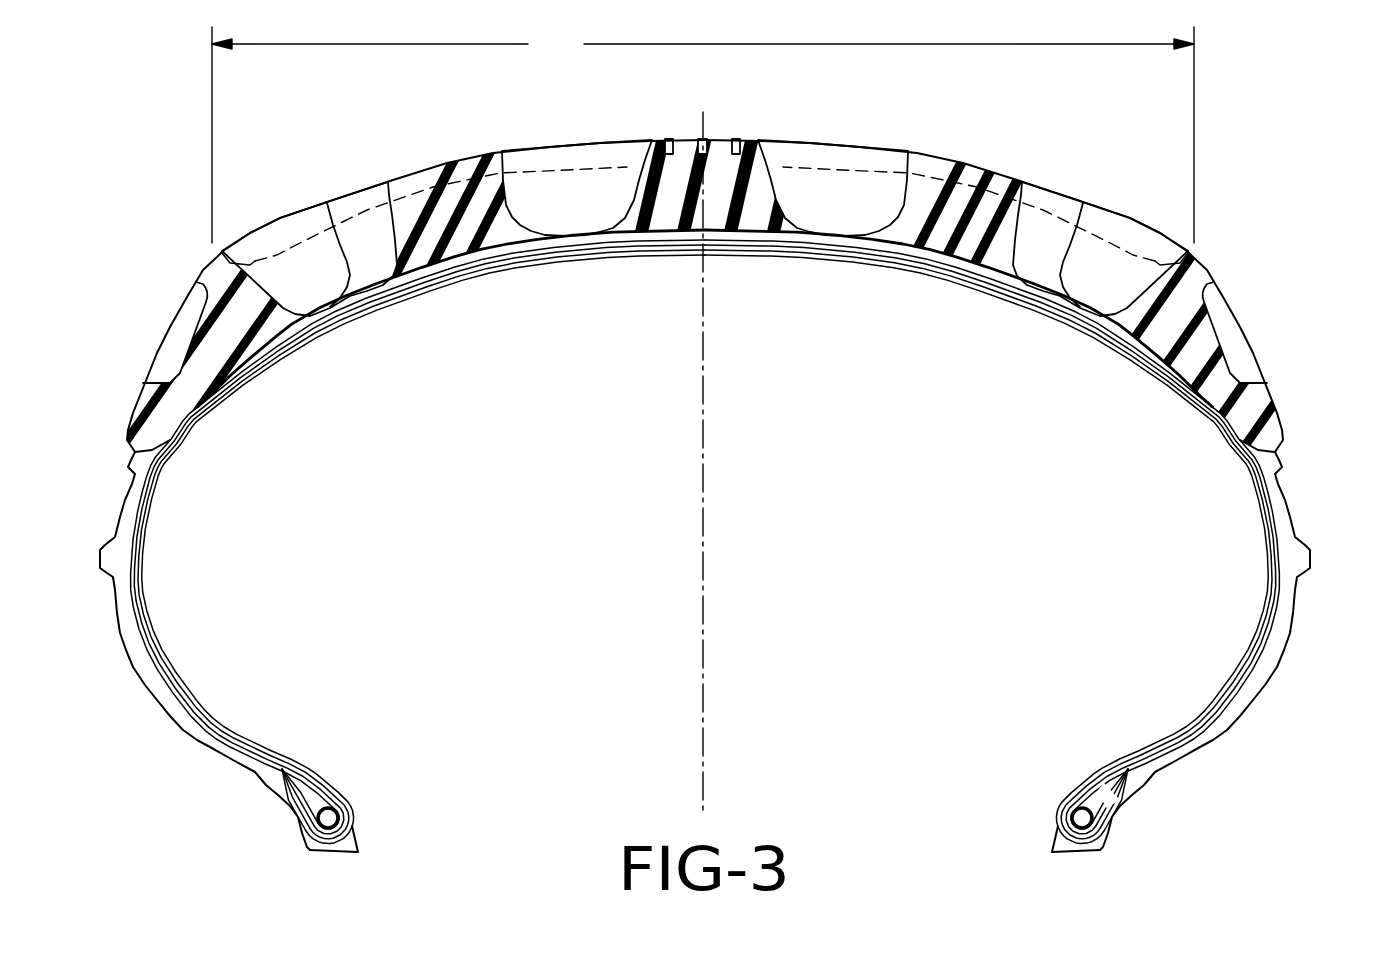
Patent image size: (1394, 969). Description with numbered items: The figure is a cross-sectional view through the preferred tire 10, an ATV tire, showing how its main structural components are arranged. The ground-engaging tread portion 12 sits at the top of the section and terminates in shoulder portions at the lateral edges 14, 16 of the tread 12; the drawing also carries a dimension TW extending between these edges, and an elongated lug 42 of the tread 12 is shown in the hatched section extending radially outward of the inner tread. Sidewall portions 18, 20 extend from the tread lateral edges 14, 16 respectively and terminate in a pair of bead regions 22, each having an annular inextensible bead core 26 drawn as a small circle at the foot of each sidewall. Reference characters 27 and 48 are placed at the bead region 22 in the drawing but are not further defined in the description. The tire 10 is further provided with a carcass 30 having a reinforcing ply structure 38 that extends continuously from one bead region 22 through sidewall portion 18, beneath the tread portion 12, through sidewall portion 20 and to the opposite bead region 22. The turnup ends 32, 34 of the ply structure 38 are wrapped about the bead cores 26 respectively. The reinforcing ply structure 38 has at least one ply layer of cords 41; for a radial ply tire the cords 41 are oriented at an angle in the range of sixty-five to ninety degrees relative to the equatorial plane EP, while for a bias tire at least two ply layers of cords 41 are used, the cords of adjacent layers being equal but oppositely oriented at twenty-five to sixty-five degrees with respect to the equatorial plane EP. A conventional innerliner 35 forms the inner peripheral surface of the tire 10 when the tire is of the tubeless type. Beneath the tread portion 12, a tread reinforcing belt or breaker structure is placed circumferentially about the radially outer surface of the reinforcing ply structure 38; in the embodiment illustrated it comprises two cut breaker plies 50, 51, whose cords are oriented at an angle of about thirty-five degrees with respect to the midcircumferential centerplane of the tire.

The tire 10 is at (697, 452).
The tread portion 12 is at (697, 300).
The lateral edge of the tread 14 is at (212, 137).
The lateral edge of the tread 16 is at (1194, 137).
The sidewall portion 18 is at (1252, 700).
The sidewall portion 20 is at (159, 704).
The bead region 22 is at (1118, 788).
The bead core 26 is at (357, 826).
The bead base 27 is at (1091, 827).
The carcass 30 is at (705, 537).
The turnup end 32 is at (1190, 738).
The turnup end 34 is at (219, 740).
The innerliner 35 is at (1233, 676).
The reinforcing ply structure 38 is at (764, 544).
The cords 41 is at (1258, 670).
The elongated lug 42 is at (748, 184).
The bead apex 48 is at (1104, 783).
The cut breaker ply 50 is at (773, 243).
The cut breaker ply 51 is at (837, 243).
The tread width TW is at (703, 44).
The equatorial plane EP is at (704, 444).